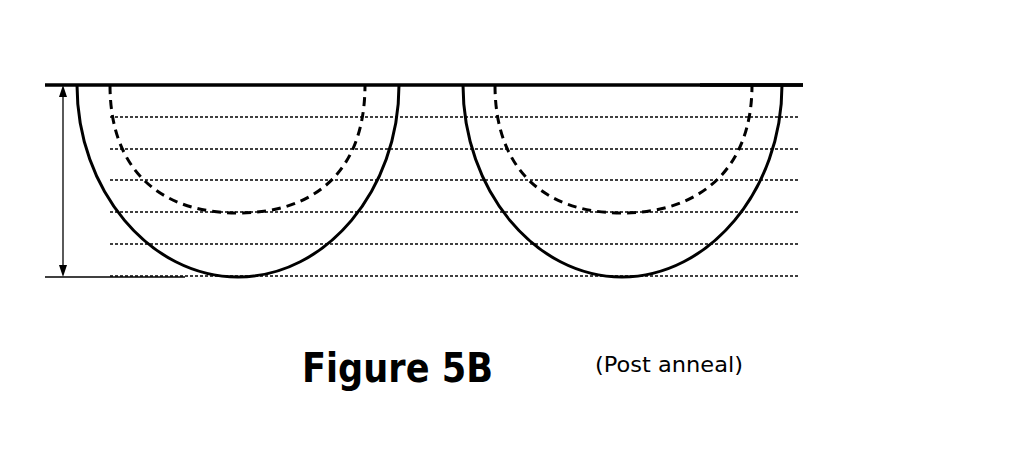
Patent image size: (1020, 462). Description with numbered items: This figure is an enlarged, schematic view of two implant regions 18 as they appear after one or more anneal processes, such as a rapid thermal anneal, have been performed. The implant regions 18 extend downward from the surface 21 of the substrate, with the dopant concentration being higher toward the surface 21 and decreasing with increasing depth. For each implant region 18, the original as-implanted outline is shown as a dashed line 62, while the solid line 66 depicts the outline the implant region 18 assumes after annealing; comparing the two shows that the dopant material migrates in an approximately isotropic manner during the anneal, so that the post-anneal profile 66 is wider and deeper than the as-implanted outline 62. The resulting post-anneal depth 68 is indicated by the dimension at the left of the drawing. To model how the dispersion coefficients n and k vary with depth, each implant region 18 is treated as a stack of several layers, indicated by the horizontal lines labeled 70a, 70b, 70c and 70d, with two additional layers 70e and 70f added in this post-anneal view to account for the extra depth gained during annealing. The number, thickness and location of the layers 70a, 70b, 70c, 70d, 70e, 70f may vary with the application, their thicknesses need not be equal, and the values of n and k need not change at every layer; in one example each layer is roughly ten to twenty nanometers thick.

The implant region 18 is at (222, 102).
The surface 21 is at (768, 88).
The line 62 is at (495, 100).
The line 66 is at (167, 257).
The post-anneal depth 68 is at (63, 147).
The layer 70a is at (800, 107).
The layer 70b is at (800, 138).
The layer 70c is at (800, 170).
The layer 70d is at (800, 202).
The layer 70e is at (800, 233).
The layer 70f is at (800, 265).